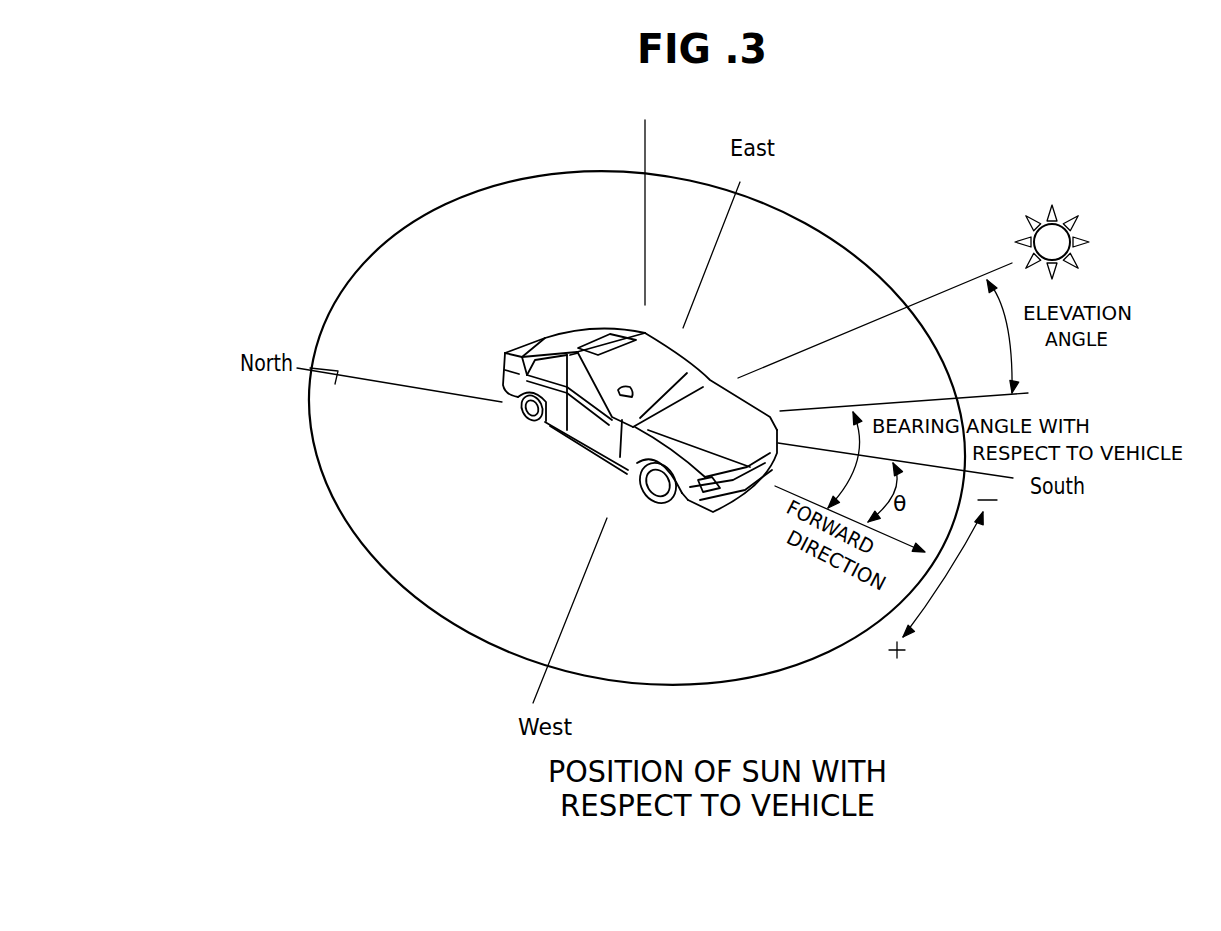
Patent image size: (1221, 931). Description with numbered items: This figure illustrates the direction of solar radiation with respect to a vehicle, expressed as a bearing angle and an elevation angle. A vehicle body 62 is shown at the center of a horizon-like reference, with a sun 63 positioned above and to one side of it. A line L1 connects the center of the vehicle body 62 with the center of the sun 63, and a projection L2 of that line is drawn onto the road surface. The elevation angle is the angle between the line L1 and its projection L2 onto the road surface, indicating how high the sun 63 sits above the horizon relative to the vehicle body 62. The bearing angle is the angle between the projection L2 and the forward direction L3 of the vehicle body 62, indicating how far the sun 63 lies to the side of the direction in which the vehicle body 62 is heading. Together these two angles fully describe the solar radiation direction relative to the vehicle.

The vehicle body 62 is at (583, 323).
The sun 63 is at (1062, 222).
The line connecting the center of the vehicle body with the center of the sun L1 is at (873, 323).
The projection onto the road surface L2 is at (977, 397).
The forward direction of the vehicle body L3 is at (900, 548).